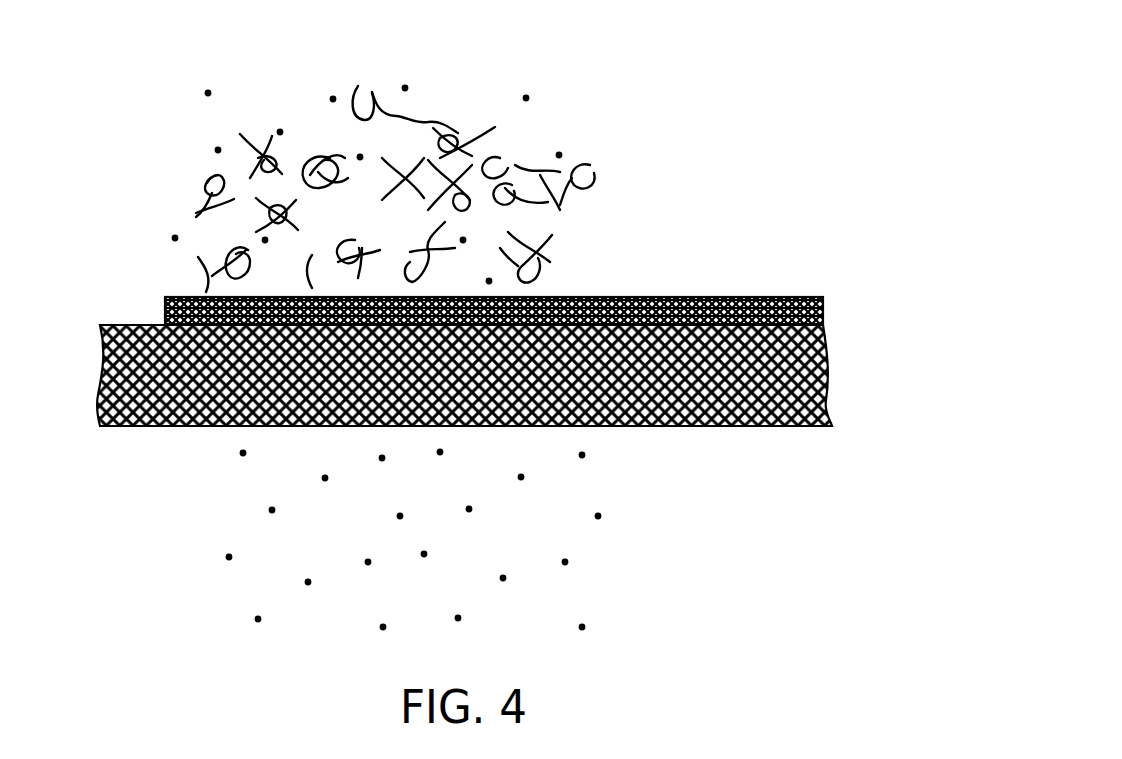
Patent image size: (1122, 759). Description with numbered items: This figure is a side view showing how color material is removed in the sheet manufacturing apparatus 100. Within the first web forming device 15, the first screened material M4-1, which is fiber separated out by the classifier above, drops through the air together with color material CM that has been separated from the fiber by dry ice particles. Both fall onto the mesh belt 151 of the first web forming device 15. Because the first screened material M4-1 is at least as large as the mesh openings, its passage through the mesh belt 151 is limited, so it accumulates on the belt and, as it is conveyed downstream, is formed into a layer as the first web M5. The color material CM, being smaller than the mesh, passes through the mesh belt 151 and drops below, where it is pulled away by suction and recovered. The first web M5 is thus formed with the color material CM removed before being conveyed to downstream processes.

The sheet manufacturing apparatus 100 is at (778, 58).
The first web forming device 15 is at (778, 231).
The mesh belt 151 is at (806, 370).
The first web M5 is at (806, 309).
The first screened material M4-1 is at (204, 180).
The color material CM is at (214, 148).